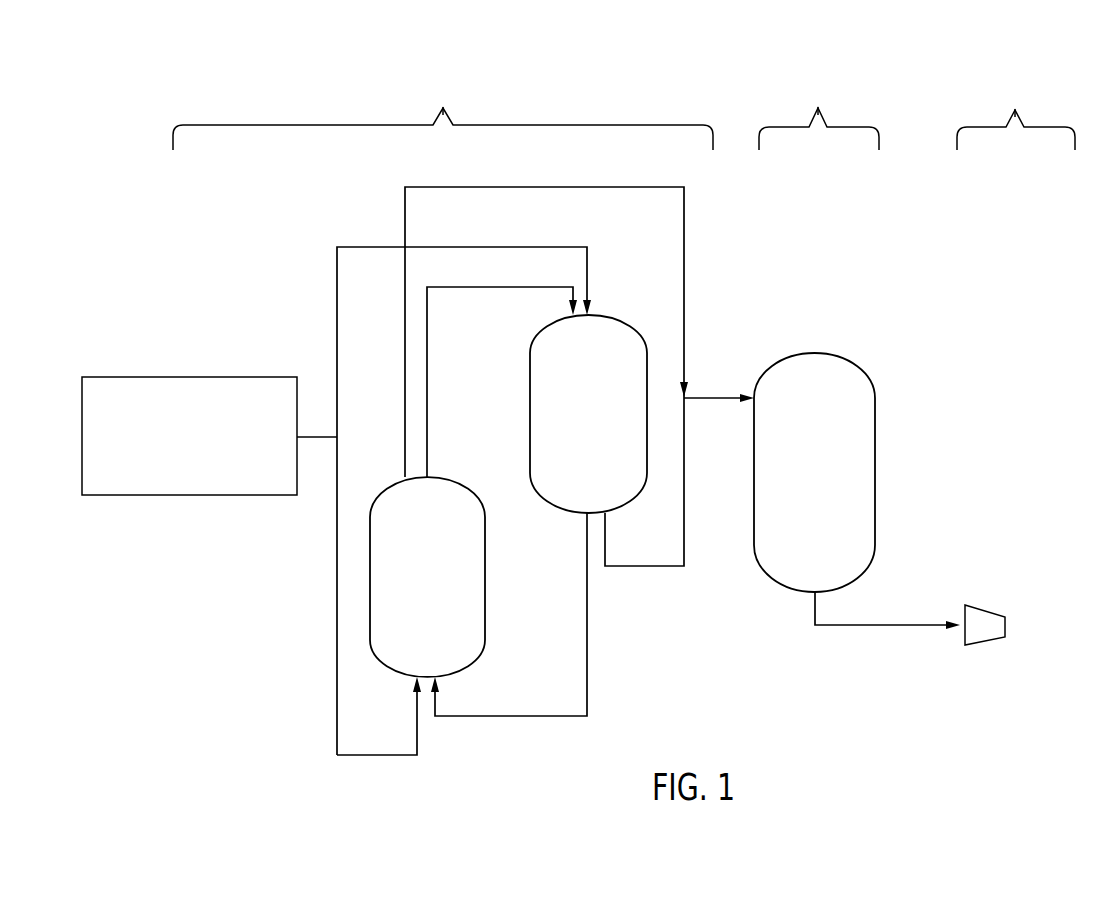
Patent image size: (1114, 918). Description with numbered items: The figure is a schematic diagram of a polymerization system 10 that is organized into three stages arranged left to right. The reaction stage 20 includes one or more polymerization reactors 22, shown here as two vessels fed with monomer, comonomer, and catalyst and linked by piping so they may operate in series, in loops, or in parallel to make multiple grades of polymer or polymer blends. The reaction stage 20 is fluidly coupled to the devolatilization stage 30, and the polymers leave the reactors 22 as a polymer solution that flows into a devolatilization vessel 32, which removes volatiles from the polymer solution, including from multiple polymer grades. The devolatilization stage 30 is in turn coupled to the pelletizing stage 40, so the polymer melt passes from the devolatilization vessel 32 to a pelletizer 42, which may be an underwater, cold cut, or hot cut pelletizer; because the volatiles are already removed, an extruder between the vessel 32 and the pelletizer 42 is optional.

The polymerization system 10 is at (543, 471).
The reaction stage 20 is at (443, 110).
The polymerization reactor 22 is at (441, 592).
The devolatilization stage 30 is at (824, 98).
The devolatilization vessel 32 is at (828, 485).
The pelletizing stage 40 is at (1024, 99).
The pelletizer 42 is at (982, 607).